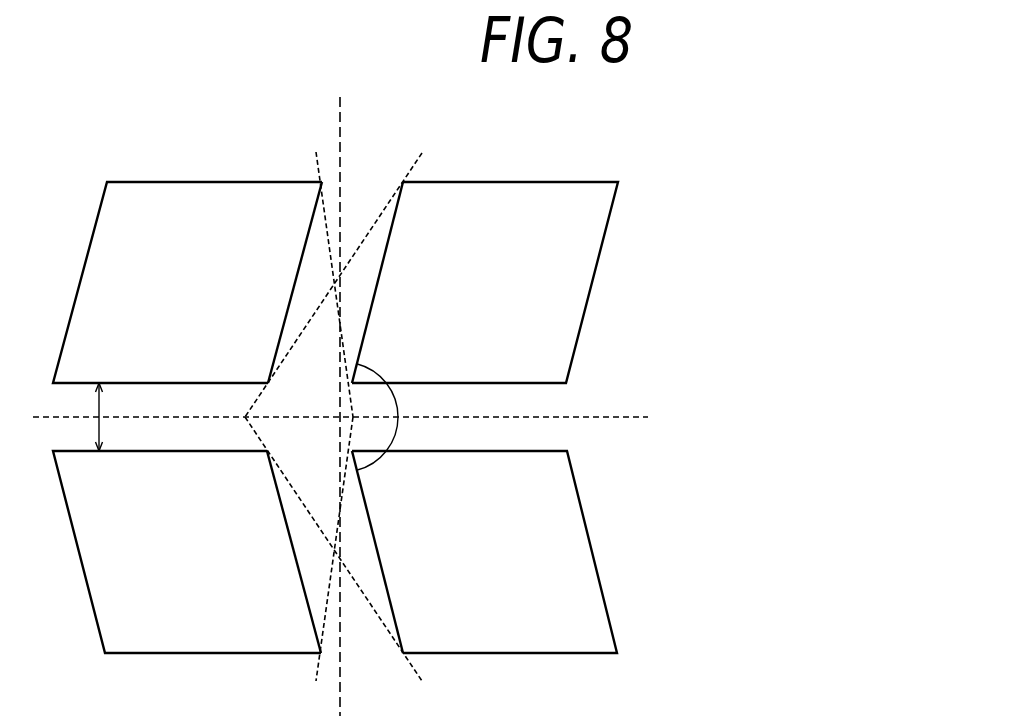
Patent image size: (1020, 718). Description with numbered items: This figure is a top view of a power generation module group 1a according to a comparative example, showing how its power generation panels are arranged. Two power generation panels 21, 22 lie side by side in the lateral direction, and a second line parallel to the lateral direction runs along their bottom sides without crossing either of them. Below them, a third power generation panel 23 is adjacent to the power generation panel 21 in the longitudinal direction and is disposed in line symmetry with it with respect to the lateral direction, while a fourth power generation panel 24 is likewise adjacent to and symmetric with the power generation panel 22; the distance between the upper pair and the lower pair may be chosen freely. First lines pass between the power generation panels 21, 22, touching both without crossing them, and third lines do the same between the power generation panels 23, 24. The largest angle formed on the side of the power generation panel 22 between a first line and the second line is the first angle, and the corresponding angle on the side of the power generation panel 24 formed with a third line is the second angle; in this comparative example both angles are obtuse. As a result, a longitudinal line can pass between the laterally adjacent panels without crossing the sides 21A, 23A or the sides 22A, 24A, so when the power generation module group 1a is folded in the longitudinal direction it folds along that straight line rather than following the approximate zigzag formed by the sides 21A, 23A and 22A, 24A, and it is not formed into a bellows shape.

The power generation module group 1a is at (720, 83).
The power generation panel 21 is at (88, 290).
The side 21A is at (294, 285).
The power generation panel 22 is at (580, 288).
The side 22A is at (377, 288).
The third power generation panel 23 is at (88, 551).
The side 23A is at (294, 546).
The fourth power generation panel 24 is at (583, 548).
The side 24A is at (377, 547).